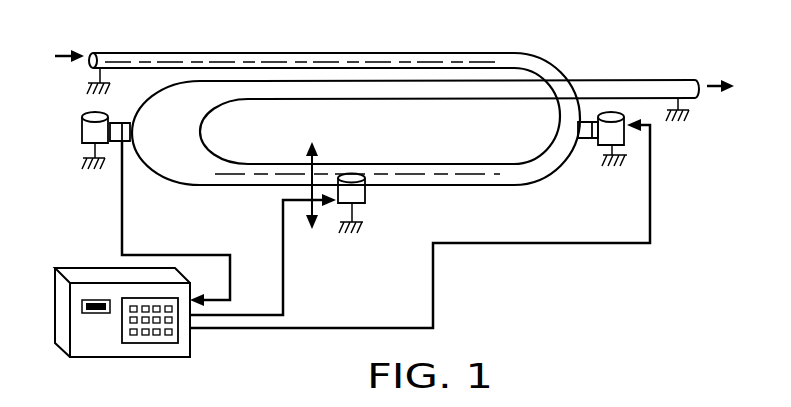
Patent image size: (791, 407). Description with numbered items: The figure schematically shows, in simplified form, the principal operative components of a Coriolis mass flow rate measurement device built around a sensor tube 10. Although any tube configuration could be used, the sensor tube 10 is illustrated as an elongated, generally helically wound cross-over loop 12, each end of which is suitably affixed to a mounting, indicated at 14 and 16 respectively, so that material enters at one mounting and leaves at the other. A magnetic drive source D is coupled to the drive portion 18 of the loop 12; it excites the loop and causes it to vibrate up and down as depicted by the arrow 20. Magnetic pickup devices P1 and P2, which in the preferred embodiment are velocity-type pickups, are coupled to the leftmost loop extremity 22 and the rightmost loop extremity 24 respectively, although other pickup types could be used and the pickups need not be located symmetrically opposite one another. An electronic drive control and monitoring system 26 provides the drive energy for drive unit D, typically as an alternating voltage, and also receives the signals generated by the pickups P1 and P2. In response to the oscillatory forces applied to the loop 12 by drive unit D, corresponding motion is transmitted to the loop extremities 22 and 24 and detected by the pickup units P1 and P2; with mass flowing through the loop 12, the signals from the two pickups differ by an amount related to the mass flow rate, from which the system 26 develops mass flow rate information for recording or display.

The sensor tube 10 is at (248, 203).
The cross-over loop 12 is at (348, 52).
The mounting 14 is at (117, 55).
The mounting 16 is at (618, 80).
The drive portion 18 is at (377, 165).
The arrow 20 is at (303, 158).
The leftmost loop extremity 22 is at (152, 128).
The rightmost loop extremity 24 is at (563, 128).
The electronic drive control and monitoring system 26 is at (155, 357).
The magnetic pickup device P1 is at (92, 113).
The magnetic pickup device P2 is at (608, 143).
The magnetic drive source D is at (366, 196).